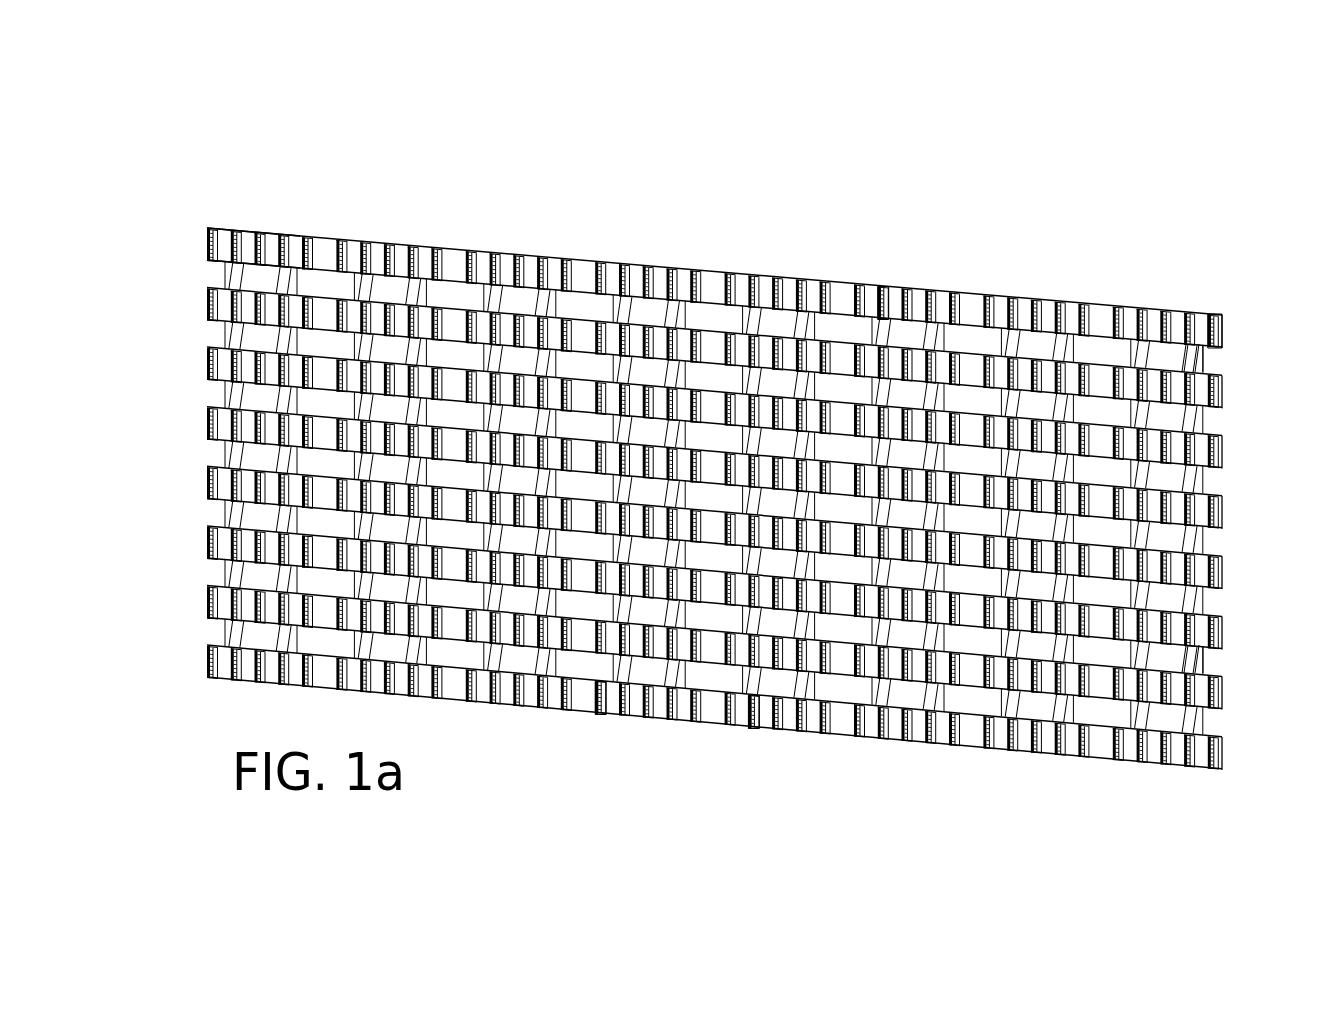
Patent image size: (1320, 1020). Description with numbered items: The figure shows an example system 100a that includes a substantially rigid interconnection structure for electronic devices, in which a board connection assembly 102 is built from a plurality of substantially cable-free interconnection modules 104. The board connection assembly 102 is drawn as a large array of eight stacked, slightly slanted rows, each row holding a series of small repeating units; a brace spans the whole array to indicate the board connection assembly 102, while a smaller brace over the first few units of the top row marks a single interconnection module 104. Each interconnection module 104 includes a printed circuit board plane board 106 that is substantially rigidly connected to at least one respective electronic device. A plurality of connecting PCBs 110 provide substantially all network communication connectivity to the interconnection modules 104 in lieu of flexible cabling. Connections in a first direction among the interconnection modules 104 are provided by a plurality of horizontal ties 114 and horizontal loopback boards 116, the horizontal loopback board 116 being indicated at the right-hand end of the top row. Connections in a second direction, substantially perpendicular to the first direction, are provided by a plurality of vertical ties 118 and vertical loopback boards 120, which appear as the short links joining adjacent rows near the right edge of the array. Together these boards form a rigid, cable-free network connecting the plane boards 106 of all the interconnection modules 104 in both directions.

The system 100a is at (249, 59).
The board connection assembly 102 is at (1275, 160).
The interconnection module 104 is at (290, 227).
The PCB plane board 106 is at (885, 290).
The connecting PCB 110 is at (762, 720).
The horizontal tie 114 is at (585, 702).
The horizontal loopback board 116 is at (1223, 318).
The vertical tie 118 is at (1187, 658).
The vertical loopback board 120 is at (1203, 358).